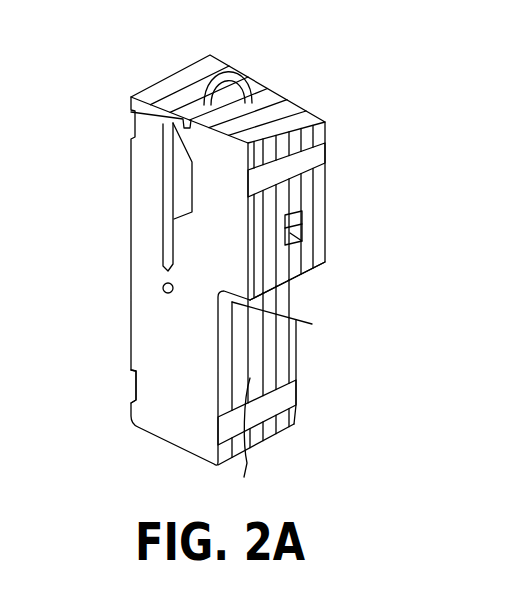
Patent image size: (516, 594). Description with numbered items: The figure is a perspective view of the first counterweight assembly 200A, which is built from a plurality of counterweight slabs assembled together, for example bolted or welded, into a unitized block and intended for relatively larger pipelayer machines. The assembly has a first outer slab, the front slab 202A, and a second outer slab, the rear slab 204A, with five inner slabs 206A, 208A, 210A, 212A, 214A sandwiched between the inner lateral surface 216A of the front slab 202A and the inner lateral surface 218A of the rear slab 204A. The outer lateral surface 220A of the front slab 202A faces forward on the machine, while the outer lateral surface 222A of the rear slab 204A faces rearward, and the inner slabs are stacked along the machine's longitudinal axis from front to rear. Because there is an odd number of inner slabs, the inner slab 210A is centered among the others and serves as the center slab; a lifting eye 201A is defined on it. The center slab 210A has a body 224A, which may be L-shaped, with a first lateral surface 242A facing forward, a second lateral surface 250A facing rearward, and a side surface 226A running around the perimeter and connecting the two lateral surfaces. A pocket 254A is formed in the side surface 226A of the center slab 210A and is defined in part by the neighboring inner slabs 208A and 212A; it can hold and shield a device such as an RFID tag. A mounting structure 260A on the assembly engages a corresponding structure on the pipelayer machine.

The first counterweight assembly 200A is at (140, 59).
The lifting eye 201A is at (220, 68).
The front slab 202A is at (230, 137).
The rear slab 204A is at (322, 122).
The inner slab 206A is at (327, 163).
The inner slab 208A is at (280, 193).
The center slab 210A is at (290, 206).
The pocket 254A is at (298, 220).
The inner slab 212A is at (300, 238).
The inner slab 214A is at (320, 262).
The inner lateral surface of the front slab 216A is at (290, 322).
The inner lateral surface of the rear slab 218A is at (290, 330).
The outer lateral surface of the rear slab 222A is at (303, 370).
The side surface 226A is at (303, 411).
The second lateral surface 250A is at (283, 430).
The first lateral surface 242A is at (247, 465).
The mounting structure 260A is at (155, 125).
The outer lateral surface of the front slab 220A is at (140, 262).
The body 224A is at (123, 357).